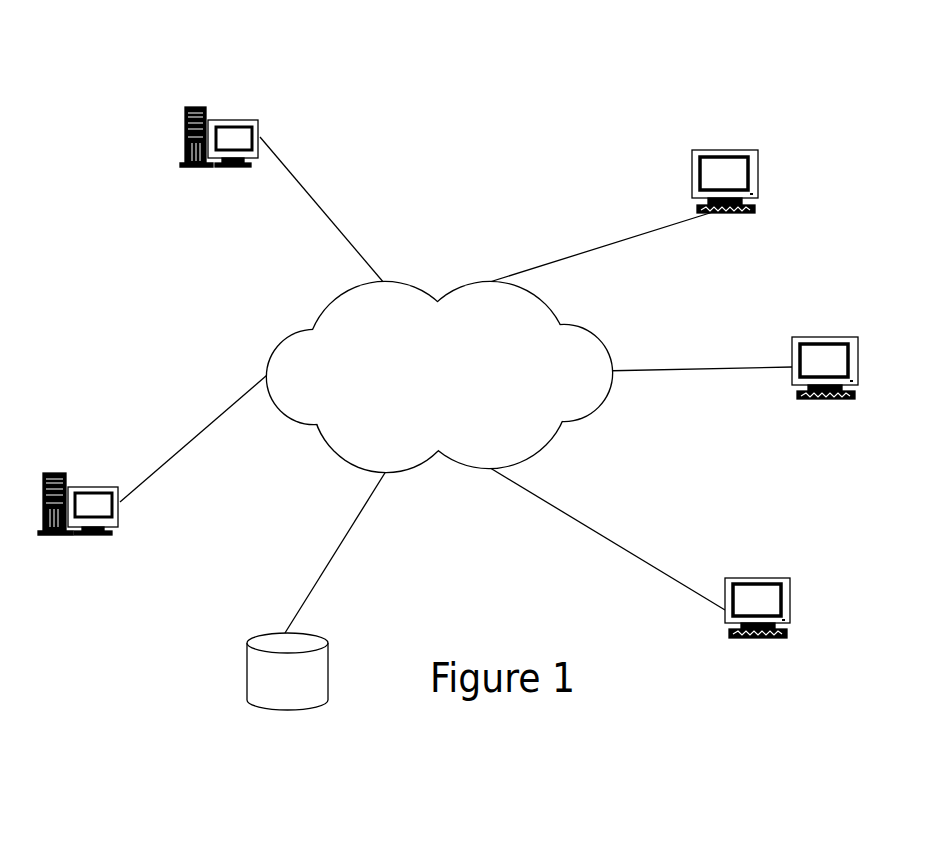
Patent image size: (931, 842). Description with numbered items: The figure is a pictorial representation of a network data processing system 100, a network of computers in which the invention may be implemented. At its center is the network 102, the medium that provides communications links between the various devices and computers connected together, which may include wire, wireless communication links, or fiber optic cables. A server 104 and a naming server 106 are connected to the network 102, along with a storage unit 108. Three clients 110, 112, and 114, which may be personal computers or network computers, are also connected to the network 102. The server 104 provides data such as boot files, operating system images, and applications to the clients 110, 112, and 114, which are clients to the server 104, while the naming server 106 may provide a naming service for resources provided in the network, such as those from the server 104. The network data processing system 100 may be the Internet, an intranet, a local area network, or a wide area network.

The network data processing system 100 is at (487, 621).
The network 102 is at (423, 389).
The server 104 is at (92, 488).
The naming server 106 is at (233, 117).
The storage unit 108 is at (287, 710).
The client 110 is at (723, 150).
The client 112 is at (823, 337).
The client 114 is at (758, 638).